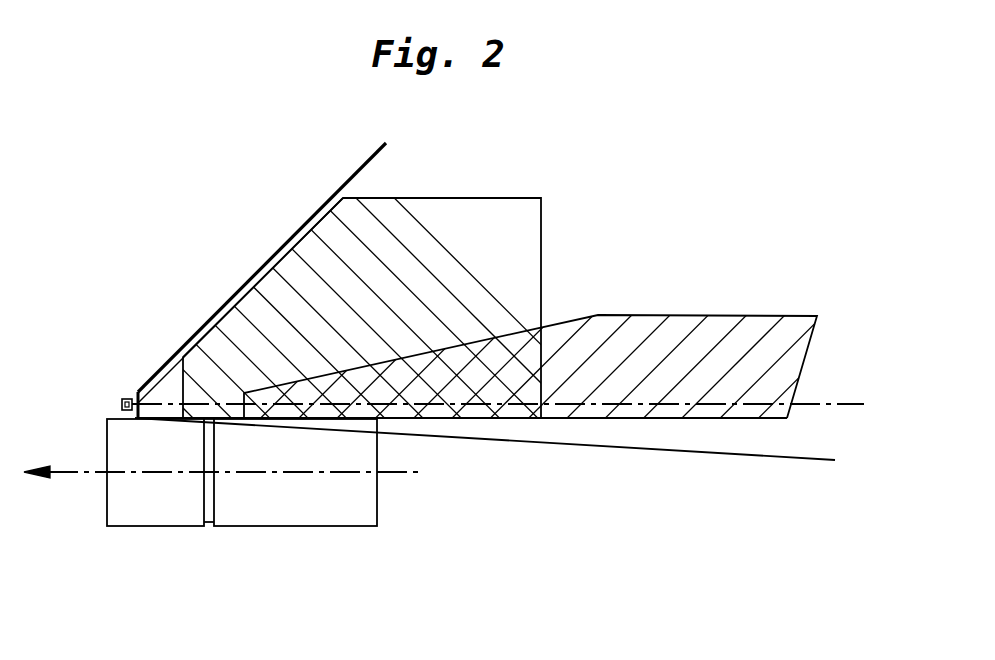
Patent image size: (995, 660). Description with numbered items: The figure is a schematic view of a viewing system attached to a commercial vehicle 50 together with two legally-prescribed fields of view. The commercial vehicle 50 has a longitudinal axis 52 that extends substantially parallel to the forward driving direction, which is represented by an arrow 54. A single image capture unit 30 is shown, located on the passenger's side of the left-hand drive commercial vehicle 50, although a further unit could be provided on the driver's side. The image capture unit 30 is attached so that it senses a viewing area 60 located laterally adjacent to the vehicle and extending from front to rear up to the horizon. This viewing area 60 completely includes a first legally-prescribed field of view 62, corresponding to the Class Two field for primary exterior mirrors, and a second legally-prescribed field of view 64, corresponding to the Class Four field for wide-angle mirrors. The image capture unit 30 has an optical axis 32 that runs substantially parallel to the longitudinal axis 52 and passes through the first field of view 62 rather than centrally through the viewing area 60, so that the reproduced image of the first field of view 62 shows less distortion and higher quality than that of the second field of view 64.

The image capture unit 30 is at (133, 397).
The optical axis 32 is at (833, 403).
The commercial vehicle 50 is at (142, 513).
The longitudinal axis 52 is at (400, 472).
The arrow 54 is at (63, 473).
The viewing area 60 is at (170, 378).
The first legally-prescribed field of view 62 is at (603, 332).
The second legally-prescribed field of view 64 is at (528, 230).